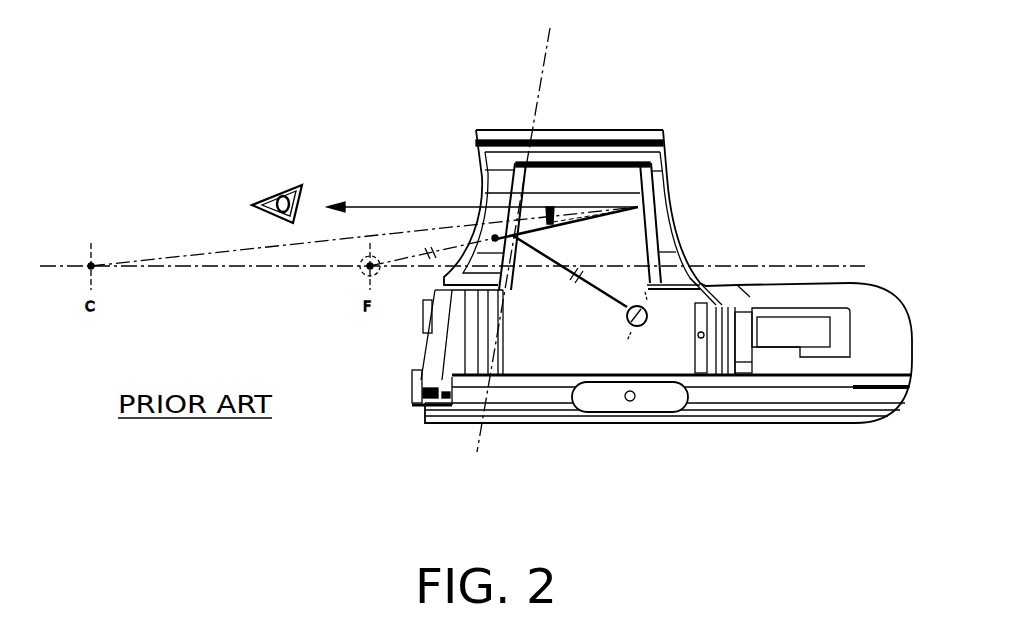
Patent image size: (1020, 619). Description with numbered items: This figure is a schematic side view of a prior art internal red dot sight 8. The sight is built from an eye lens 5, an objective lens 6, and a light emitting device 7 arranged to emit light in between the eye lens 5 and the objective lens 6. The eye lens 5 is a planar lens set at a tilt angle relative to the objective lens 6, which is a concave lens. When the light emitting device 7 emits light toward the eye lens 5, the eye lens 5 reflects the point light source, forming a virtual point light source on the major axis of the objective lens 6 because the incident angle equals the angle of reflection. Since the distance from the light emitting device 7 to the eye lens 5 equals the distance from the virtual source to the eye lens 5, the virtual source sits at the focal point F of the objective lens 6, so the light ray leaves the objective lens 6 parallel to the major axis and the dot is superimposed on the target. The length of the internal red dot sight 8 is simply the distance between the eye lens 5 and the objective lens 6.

The eye lens 5 is at (513, 183).
The objective lens 6 is at (657, 193).
The light emitting device 7 is at (648, 316).
The internal red dot sight 8 is at (608, 152).